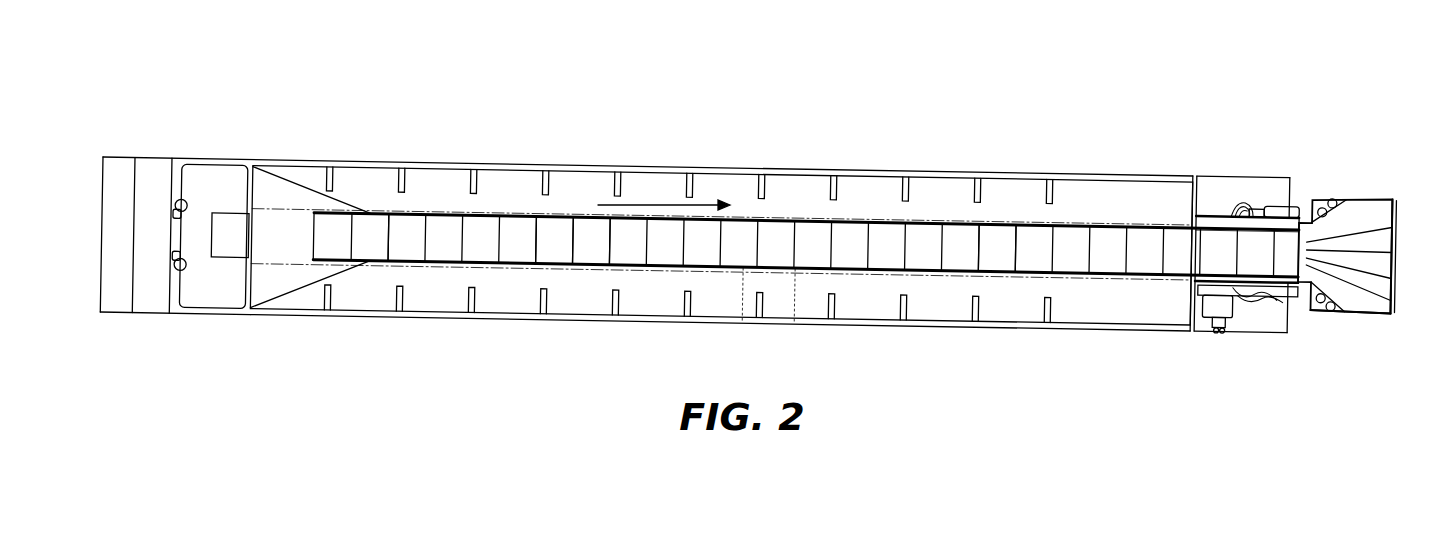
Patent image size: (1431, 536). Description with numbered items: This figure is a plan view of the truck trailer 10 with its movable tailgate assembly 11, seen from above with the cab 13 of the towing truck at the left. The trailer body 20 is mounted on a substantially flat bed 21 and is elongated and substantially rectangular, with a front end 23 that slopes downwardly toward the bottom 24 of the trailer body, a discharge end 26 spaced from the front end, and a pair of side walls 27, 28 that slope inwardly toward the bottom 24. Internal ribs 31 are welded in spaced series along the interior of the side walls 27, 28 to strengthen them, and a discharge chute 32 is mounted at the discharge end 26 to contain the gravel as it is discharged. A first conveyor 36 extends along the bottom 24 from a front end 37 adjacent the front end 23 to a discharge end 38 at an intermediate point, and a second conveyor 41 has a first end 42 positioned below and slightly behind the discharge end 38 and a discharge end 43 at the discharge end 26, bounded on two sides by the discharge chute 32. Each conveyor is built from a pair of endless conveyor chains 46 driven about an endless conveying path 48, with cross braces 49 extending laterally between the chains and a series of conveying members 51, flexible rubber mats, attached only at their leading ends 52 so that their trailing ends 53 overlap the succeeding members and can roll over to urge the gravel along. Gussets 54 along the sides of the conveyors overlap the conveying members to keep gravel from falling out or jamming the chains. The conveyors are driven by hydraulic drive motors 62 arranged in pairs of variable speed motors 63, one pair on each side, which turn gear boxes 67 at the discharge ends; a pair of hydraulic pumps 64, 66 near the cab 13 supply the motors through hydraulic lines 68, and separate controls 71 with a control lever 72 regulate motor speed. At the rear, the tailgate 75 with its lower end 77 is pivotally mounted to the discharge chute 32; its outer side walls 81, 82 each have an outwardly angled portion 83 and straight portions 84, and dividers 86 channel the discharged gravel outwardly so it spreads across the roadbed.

The truck trailer 10 is at (829, 112).
The movable tailgate assembly 11 is at (1339, 156).
The cab 13 is at (130, 222).
The trailer body 20 is at (628, 157).
The bed 21 is at (232, 182).
The front end 23 is at (260, 190).
The bottom 24 is at (197, 313).
The discharge end 26 is at (1204, 230).
The side wall 27 is at (808, 325).
The side wall 28 is at (952, 172).
The internal ribs 31 is at (908, 305).
The discharge chute 32 is at (1196, 300).
The first conveyor 36 is at (636, 266).
The front end 37 is at (210, 244).
The discharge end 38 is at (994, 237).
The second conveyor 41 is at (1034, 264).
The first end 42 is at (997, 263).
The discharge end 43 is at (1256, 205).
The endless conveyor chains 46 is at (689, 238).
The endless conveying path 48 is at (664, 196).
The cross braces 49 is at (768, 314).
The conveying members 51 is at (556, 250).
The leading end 52 is at (613, 245).
The trailing end 53 is at (590, 240).
The gussets 54 is at (407, 250).
The drive motors 62 is at (1280, 197).
The variable speed motors 63 is at (1298, 210).
The hydraulic pump 64 is at (176, 268).
The hydraulic pump 66 is at (178, 200).
The gear boxes 67 is at (1349, 254).
The hydraulic lines 68 is at (212, 160).
The controls 71 is at (1230, 312).
The control lever 72 is at (1222, 312).
The tailgate 75 is at (1370, 312).
The lower end 77 is at (1399, 240).
The outer side wall 81 is at (1312, 305).
The outer side wall 82 is at (1362, 200).
The outwardly angled portion 83 is at (1332, 296).
The straight portions 84 is at (1382, 205).
The dividers 86 is at (1395, 300).